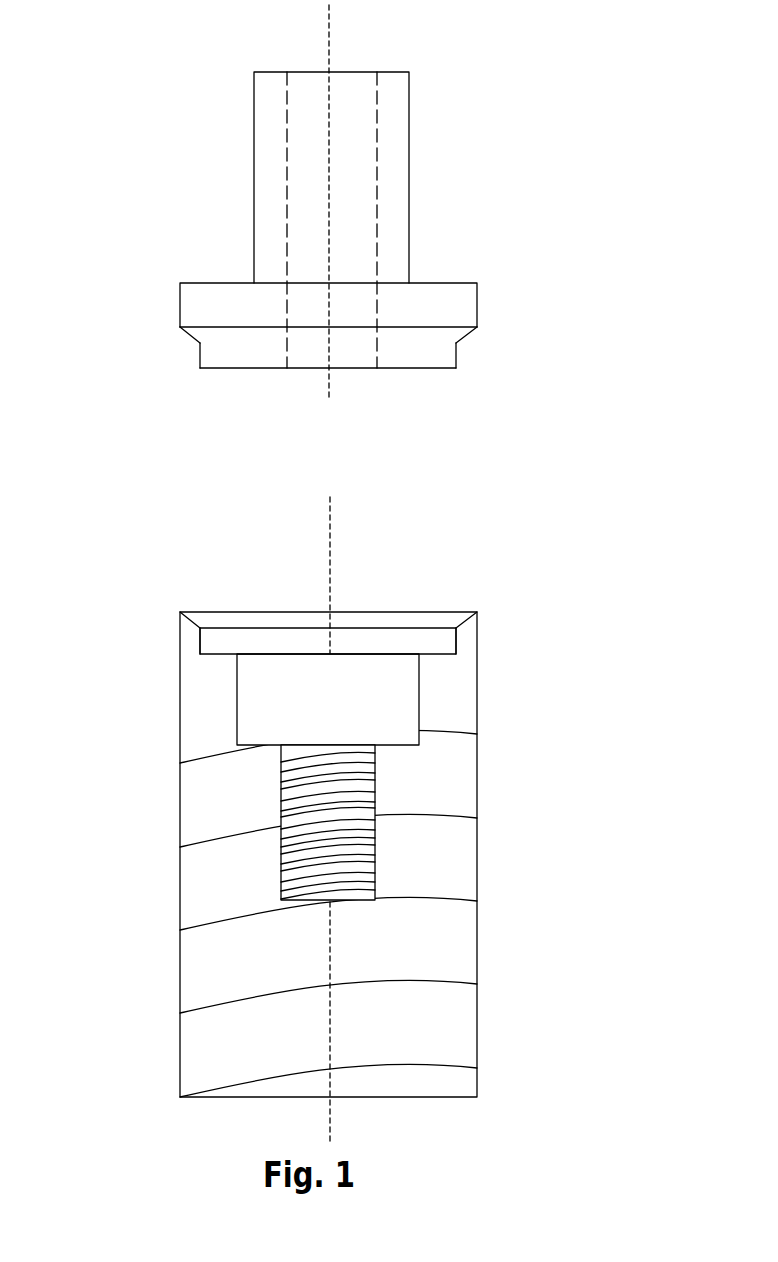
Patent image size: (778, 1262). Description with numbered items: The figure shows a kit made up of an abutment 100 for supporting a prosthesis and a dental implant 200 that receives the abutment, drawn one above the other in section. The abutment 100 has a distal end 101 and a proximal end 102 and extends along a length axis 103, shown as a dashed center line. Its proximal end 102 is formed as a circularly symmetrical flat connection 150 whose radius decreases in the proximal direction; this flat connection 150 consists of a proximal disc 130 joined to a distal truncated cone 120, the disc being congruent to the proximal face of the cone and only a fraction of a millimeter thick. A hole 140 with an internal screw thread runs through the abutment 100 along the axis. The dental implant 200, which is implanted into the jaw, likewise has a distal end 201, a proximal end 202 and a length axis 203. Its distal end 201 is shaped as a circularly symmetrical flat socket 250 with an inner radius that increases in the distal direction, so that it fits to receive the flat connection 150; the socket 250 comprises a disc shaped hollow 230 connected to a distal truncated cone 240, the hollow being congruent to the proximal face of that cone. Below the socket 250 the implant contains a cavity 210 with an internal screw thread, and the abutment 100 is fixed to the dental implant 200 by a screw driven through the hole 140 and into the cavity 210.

The abutment 100 is at (291, 31).
The distal end 101 is at (451, 85).
The proximal end 102 is at (521, 282).
The length axis 103 is at (329, 50).
The truncated cone 120 is at (462, 337).
The proximal disc 130 is at (458, 352).
The hole 140 is at (377, 203).
The flat connection 150 is at (132, 370).
The dental implant 200 is at (278, 544).
The distal end 201 is at (523, 638).
The proximal end 202 is at (531, 980).
The length axis 203 is at (350, 561).
The cavity 210 is at (352, 857).
The disc shaped hollow 230 is at (433, 638).
The truncated cone 240 is at (440, 621).
The socket 250 is at (133, 613).